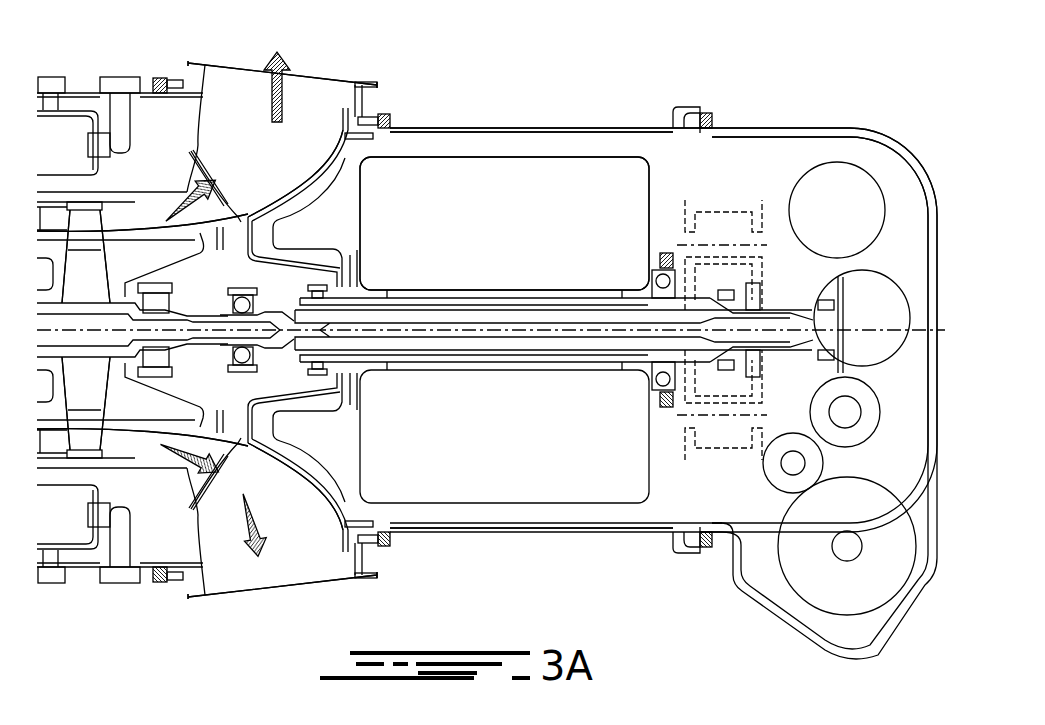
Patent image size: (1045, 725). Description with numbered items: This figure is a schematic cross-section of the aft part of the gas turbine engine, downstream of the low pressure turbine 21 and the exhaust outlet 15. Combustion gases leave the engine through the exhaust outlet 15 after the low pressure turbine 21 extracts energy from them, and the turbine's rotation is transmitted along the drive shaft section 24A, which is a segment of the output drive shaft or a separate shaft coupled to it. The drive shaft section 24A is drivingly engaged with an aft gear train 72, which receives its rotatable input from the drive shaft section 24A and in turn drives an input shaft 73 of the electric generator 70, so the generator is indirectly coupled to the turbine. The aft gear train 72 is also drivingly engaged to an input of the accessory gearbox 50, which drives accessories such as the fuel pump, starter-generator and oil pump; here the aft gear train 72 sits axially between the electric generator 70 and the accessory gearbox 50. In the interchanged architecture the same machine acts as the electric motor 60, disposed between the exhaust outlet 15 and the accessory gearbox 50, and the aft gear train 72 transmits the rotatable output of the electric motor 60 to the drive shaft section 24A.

The exhaust outlet 15 is at (306, 542).
The low pressure turbine 21 is at (93, 267).
The drive shaft section 24A is at (355, 307).
The electric generator 70 is at (497, 160).
The electric motor 60 is at (504, 223).
The input shaft 73 is at (633, 297).
The accessory gearbox 50 is at (845, 183).
The aft gear train 72 is at (699, 440).